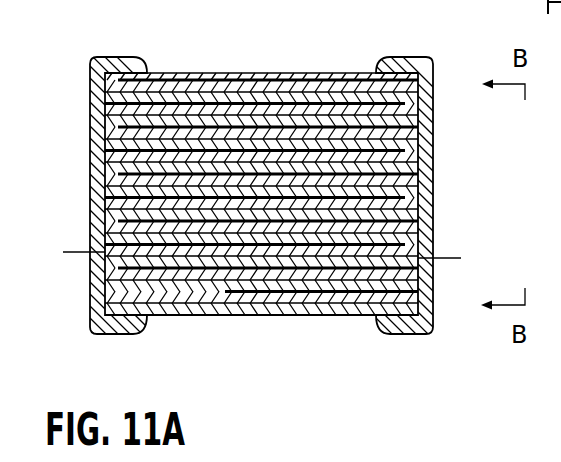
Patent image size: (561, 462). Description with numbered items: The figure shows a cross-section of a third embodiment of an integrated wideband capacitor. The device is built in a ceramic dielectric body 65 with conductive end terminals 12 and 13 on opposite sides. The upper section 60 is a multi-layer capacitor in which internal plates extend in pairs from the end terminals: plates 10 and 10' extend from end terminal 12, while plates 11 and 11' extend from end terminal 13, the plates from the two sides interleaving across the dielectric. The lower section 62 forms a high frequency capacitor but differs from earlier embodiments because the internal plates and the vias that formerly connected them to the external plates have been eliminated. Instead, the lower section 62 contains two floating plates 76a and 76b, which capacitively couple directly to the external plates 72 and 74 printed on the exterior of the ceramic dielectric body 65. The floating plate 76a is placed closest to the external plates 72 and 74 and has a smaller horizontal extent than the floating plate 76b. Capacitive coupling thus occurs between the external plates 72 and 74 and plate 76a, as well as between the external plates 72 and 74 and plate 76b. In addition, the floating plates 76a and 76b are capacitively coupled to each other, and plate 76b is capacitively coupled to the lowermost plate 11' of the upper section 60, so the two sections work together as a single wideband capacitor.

The plate 10 is at (226, 154).
The plate 10' is at (226, 229).
The plate 11 is at (292, 130).
The plate 11' is at (289, 228).
The end terminal 12 is at (90, 73).
The end terminal 13 is at (433, 67).
The upper section 60 is at (473, 80).
The lower section 62 is at (85, 257).
The ceramic dielectric body 65 is at (320, 73).
The external plate 72 is at (352, 316).
The external plate 74 is at (166, 316).
The floating plate 76a is at (267, 300).
The floating plate 76b is at (210, 280).